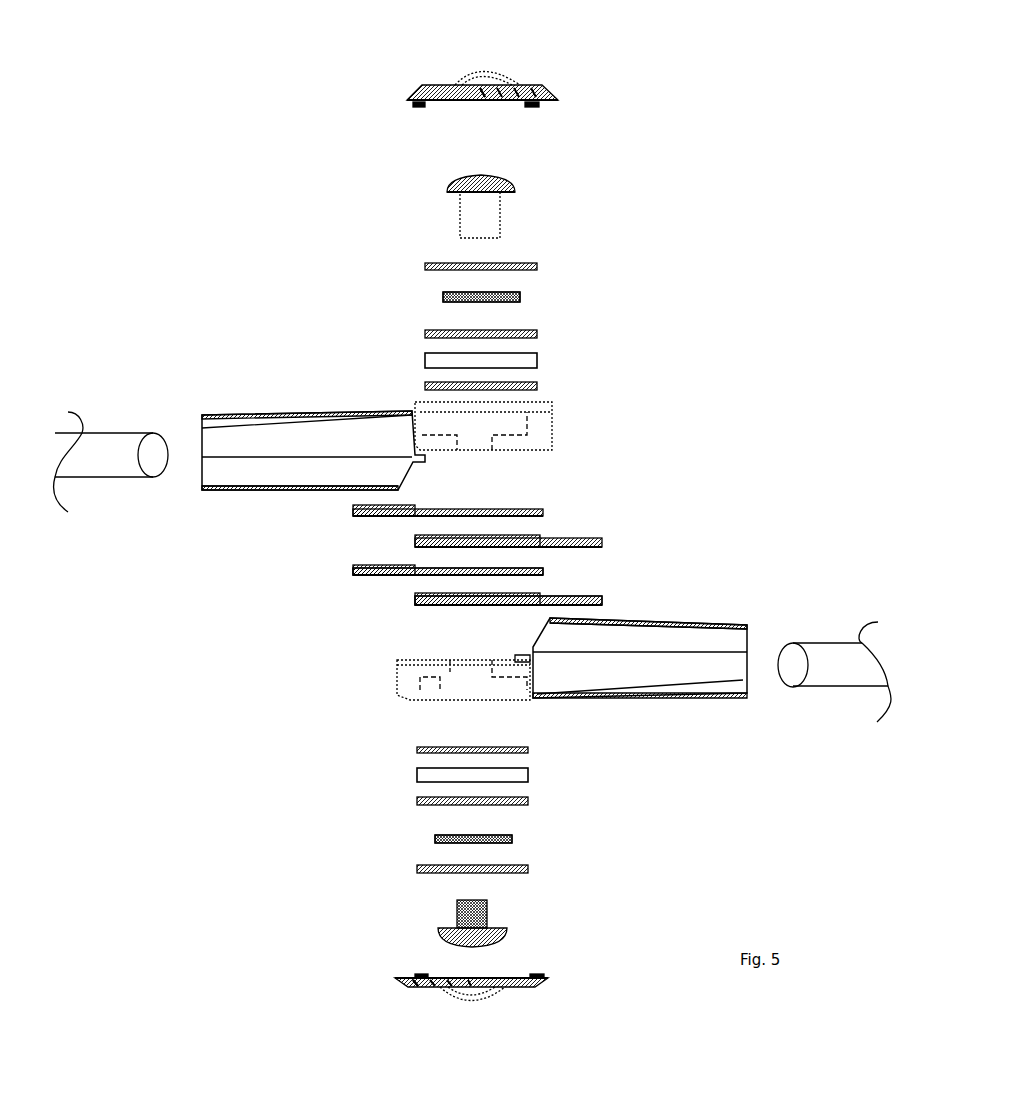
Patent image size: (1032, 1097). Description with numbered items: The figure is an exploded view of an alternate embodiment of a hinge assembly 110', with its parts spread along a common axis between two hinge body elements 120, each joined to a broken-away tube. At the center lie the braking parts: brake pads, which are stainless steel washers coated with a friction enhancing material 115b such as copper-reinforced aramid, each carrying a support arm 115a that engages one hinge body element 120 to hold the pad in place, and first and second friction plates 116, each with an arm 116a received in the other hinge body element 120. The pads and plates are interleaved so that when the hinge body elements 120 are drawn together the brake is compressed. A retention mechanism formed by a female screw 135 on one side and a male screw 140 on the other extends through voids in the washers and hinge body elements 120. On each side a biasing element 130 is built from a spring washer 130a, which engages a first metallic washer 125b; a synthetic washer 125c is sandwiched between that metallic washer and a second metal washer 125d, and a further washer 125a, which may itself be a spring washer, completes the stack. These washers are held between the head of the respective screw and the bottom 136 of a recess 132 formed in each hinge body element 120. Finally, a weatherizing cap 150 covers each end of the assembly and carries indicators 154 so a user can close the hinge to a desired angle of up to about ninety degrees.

The hinge assembly 110' is at (824, 181).
The support arm 115a is at (578, 533).
The friction enhancing material 115b is at (420, 535).
The friction plate 116 is at (543, 573).
The friction plate arm 116a is at (370, 575).
The hinge body element 120 is at (222, 405).
The washer 125a is at (528, 267).
The first metallic washer 125b is at (427, 330).
The synthetic washer 125c is at (427, 360).
The second metal washer 125d is at (427, 385).
The biasing element 130 is at (350, 272).
The spring washer 130a is at (520, 298).
The recess 132 is at (512, 432).
The female screw 135 is at (493, 216).
The bottom of recess 136 is at (530, 437).
The male screw 140 is at (457, 913).
The weatherizing cap 150 is at (430, 90).
The indicators 154 is at (523, 94).